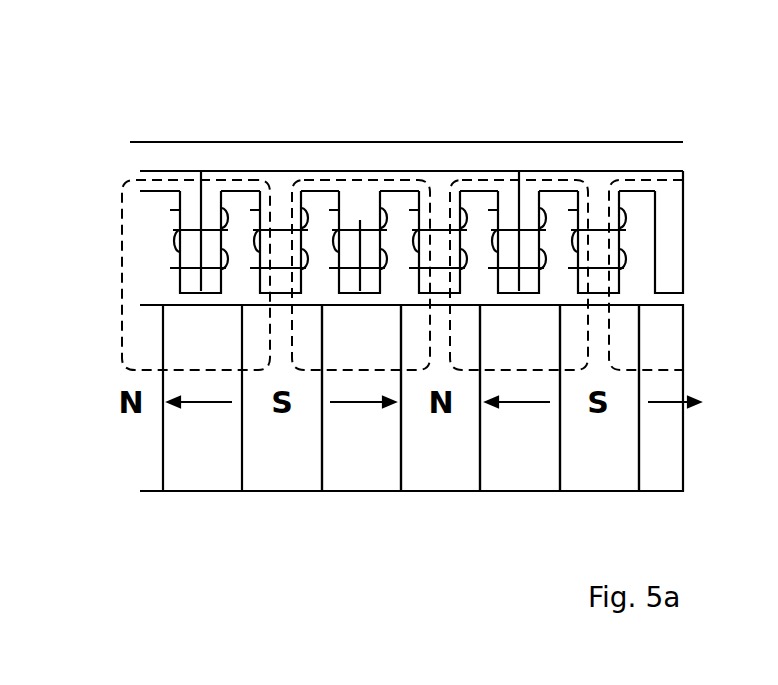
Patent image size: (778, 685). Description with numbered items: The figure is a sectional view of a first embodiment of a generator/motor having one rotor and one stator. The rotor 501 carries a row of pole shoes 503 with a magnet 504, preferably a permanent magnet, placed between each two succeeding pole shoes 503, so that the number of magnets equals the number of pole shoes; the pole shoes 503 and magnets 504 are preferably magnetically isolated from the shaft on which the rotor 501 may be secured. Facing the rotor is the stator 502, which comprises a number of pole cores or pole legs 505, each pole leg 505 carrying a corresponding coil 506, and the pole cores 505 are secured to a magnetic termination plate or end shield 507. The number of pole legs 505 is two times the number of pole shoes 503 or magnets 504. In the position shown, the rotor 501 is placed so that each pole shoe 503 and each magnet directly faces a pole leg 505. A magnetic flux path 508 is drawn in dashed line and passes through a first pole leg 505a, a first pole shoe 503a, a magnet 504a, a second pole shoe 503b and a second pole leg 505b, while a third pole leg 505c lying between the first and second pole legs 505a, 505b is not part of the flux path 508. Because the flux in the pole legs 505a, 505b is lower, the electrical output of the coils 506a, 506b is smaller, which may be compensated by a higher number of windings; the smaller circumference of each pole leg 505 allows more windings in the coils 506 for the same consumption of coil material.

The rotor 501 is at (145, 443).
The stator 502 is at (162, 178).
The pole shoe 503 is at (600, 448).
The first pole shoe 503a is at (280, 445).
The second pole shoe 503b is at (435, 445).
The magnet 504 is at (520, 438).
The magnet 504a is at (366, 452).
The pole core or pole leg 505 is at (526, 205).
The first pole leg 505a is at (282, 265).
The second pole leg 505b is at (434, 275).
The third pole leg 505c is at (364, 220).
The coil 506 is at (527, 228).
The coil 506a is at (284, 232).
The coil 506b is at (433, 225).
The magnetic termination plate/end shield 507 is at (237, 152).
The magnetic flux path 508 is at (338, 366).